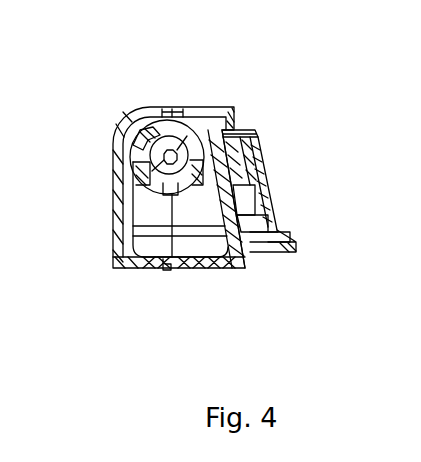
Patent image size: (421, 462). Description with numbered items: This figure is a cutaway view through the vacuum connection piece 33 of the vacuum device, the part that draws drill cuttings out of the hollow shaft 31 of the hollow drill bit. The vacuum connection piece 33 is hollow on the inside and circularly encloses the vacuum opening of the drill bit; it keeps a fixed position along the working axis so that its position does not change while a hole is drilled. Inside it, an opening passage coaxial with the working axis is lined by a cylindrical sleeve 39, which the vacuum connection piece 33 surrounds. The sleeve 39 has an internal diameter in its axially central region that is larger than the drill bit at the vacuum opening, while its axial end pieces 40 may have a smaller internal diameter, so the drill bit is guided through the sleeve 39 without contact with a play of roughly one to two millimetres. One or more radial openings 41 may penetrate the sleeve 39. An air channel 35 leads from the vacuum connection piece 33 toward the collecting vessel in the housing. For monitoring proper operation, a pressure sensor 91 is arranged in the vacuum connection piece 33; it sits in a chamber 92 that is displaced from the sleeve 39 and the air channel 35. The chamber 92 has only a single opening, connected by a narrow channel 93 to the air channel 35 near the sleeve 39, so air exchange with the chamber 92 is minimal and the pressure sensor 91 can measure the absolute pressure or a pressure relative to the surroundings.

The vacuum connection piece 33 is at (98, 83).
The air channel 35 is at (162, 245).
The axial end pieces 40 is at (172, 123).
The hollow shaft 31 is at (174, 149).
The cylindrical sleeve 39 is at (195, 150).
The radial openings 41 is at (140, 148).
The channel 93 is at (250, 205).
The chamber 92 is at (255, 220).
The pressure sensor 91 is at (255, 223).